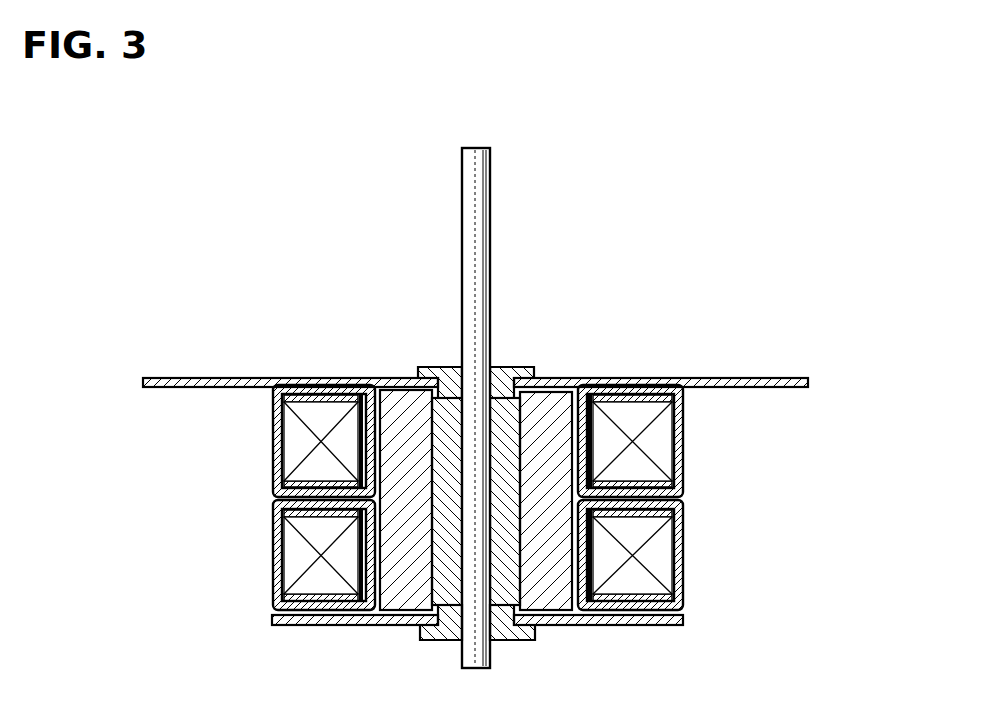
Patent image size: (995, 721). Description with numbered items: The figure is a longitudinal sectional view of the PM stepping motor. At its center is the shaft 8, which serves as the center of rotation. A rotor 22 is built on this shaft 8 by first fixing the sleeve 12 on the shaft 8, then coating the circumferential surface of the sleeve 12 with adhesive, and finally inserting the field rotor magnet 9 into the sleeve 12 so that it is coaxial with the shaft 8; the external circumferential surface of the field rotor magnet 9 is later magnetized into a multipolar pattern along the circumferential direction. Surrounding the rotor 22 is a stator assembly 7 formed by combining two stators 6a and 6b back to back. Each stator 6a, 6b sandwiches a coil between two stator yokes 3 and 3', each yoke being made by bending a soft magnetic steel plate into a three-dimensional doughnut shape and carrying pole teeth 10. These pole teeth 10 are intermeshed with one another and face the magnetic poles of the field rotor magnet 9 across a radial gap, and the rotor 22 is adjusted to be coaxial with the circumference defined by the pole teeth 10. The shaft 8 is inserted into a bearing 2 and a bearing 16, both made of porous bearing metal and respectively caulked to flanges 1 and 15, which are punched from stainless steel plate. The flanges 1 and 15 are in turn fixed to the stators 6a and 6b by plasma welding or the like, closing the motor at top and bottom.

The flange 1 is at (741, 378).
The bearing 2 is at (440, 367).
The stator yoke 3 is at (291, 441).
The stator yoke 3' is at (291, 555).
The stator 6a is at (484, 441).
The stator 6b is at (488, 555).
The stator assembly 7 is at (508, 497).
The shaft 8 is at (493, 263).
The field rotor magnet 9 is at (552, 413).
The pole teeth 10 is at (367, 460).
The sleeve 12 is at (510, 417).
The flange 15 is at (572, 626).
The bearing 16 is at (427, 640).
The rotor 22 is at (529, 409).